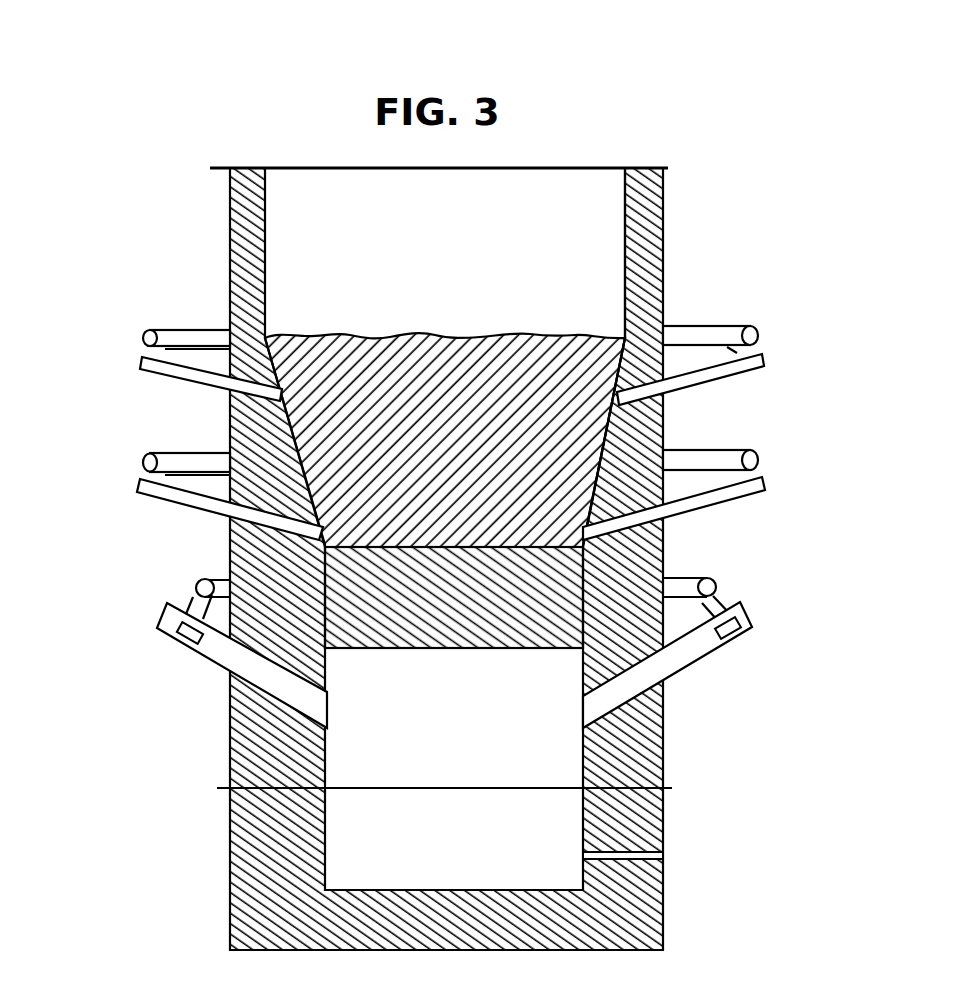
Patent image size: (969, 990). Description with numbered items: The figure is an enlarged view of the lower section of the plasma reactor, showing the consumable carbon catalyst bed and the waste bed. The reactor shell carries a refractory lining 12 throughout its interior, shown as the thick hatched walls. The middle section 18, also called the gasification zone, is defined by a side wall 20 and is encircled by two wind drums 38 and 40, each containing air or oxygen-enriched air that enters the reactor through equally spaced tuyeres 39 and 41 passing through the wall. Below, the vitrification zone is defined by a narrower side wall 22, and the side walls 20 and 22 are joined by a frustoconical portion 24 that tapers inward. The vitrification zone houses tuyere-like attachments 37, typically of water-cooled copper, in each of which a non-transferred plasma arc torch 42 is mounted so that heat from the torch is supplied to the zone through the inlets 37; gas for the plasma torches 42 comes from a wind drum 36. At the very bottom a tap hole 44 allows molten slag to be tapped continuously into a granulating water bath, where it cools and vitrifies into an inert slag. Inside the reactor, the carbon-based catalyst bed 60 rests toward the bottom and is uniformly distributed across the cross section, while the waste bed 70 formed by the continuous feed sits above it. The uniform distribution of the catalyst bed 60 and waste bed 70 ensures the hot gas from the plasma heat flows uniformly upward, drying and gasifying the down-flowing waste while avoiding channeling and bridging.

The refractory lining 12 is at (642, 238).
The middle section 18 is at (383, 262).
The side wall 20 is at (628, 282).
The side wall 22 is at (663, 528).
The frustoconical portion 24 is at (610, 422).
The wind drum 36 is at (215, 580).
The tuyere-like attachment 37 is at (262, 680).
The wind drum 38 is at (148, 462).
The tuyere 39 is at (212, 507).
The wind drum 40 is at (145, 337).
The tuyere 41 is at (208, 380).
The non-transferred plasma arc torch 42 is at (178, 624).
The tap hole 44 is at (663, 853).
The carbon-based catalyst bed 60 is at (492, 602).
The waste bed 70 is at (450, 387).